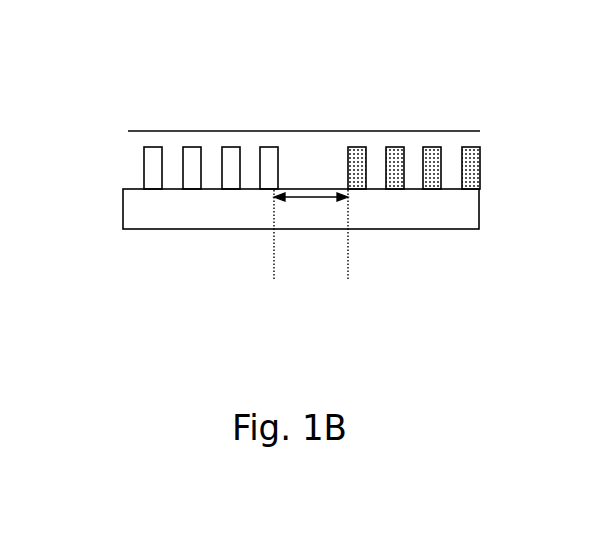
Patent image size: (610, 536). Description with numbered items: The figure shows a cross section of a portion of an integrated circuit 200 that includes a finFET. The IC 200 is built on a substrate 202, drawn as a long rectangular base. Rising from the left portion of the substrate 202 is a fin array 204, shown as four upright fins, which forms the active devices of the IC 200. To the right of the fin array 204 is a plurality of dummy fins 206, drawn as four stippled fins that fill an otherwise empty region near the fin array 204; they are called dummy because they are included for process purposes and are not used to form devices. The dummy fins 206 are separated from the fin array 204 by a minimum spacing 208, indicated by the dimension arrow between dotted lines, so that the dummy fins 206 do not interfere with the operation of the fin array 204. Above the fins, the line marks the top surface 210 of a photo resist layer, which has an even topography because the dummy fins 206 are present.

The integrated circuit 200 is at (467, 78).
The substrate 202 is at (182, 211).
The fin array 204 is at (274, 123).
The dummy fins 206 is at (477, 123).
The minimum spacing 208 is at (311, 235).
The top surface 210 is at (480, 129).